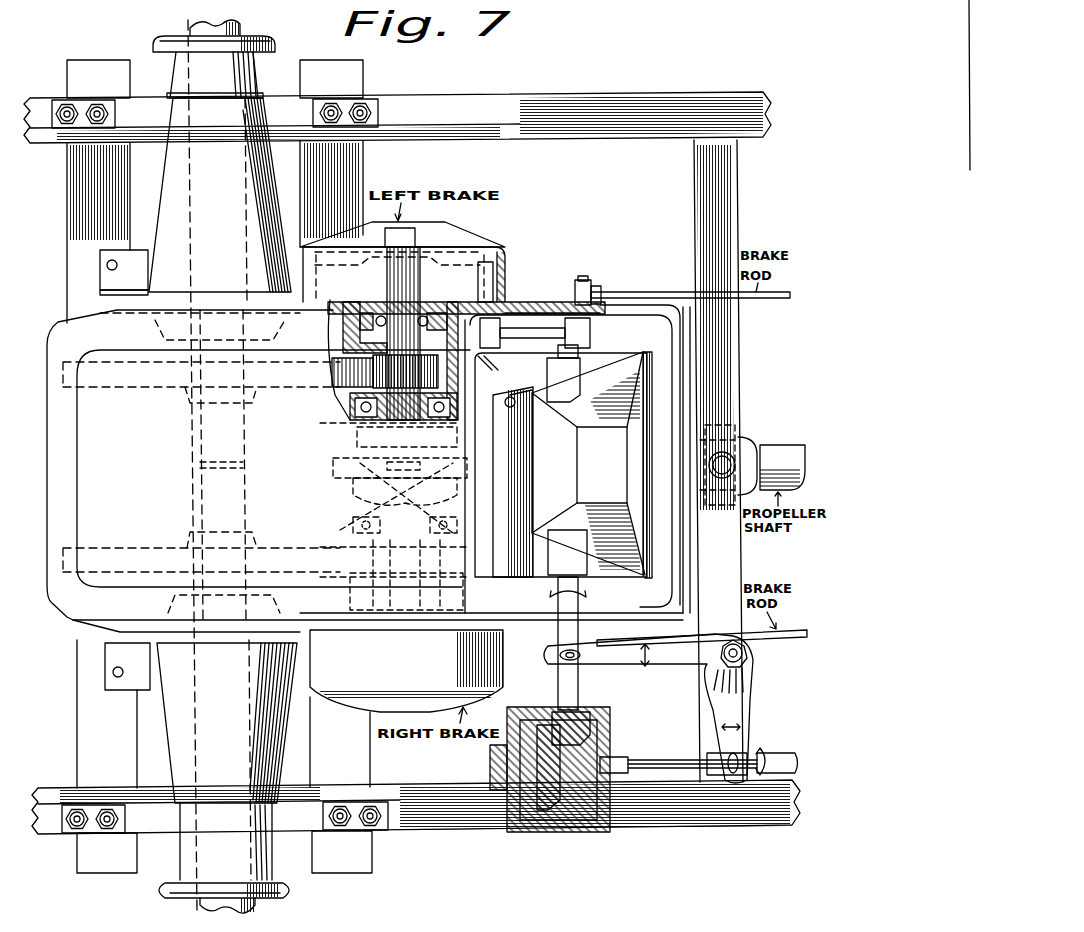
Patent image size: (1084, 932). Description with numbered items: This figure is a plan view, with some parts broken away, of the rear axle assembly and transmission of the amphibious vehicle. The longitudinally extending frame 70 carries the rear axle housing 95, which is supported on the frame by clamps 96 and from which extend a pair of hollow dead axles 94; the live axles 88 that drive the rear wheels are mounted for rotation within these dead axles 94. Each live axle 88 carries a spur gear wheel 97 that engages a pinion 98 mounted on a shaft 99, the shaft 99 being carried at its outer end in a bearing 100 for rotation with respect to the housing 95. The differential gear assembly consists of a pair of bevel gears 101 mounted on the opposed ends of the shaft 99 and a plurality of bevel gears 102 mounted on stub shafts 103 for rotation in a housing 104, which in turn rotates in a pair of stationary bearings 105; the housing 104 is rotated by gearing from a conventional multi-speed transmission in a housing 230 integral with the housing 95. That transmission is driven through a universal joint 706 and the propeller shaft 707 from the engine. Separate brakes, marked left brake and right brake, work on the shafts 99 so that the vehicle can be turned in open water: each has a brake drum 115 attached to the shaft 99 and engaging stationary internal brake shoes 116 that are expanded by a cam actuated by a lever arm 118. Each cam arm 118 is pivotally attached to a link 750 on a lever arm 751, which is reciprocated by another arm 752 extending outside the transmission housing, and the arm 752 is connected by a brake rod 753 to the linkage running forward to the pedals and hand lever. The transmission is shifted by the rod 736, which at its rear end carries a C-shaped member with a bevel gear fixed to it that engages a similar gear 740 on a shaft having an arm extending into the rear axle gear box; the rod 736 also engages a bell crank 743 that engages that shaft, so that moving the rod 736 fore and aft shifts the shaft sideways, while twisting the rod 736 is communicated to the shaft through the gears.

The frame 70 is at (497, 88).
The live axle 88 is at (244, 33).
The hollow dead axle 94 is at (166, 194).
The rear axle housing 95 is at (68, 612).
The clamp 96 is at (320, 99).
The spur gear wheel 97 is at (332, 372).
The pinion 98 is at (462, 386).
The shaft 99 is at (392, 302).
The bearing 100 is at (425, 314).
The bevel gear 101 is at (338, 495).
The bevel gear 102 is at (335, 440).
The stub shaft 103 is at (332, 473).
The differential housing 104 is at (345, 430).
The stationary bearing 105 is at (352, 410).
The brake drum 115 is at (497, 216).
The brake shoe 116 is at (492, 268).
The lever arm 118 is at (507, 311).
The transmission housing 230 is at (659, 392).
The universal joint 706 is at (724, 424).
The propeller shaft 707 is at (783, 445).
The rod 736 is at (780, 777).
The gear 740 is at (612, 732).
The bell crank 743 is at (752, 690).
The link 750 is at (543, 352).
The lever arm 751 is at (592, 334).
The arm 752 is at (589, 284).
The brake rod 753 is at (665, 292).